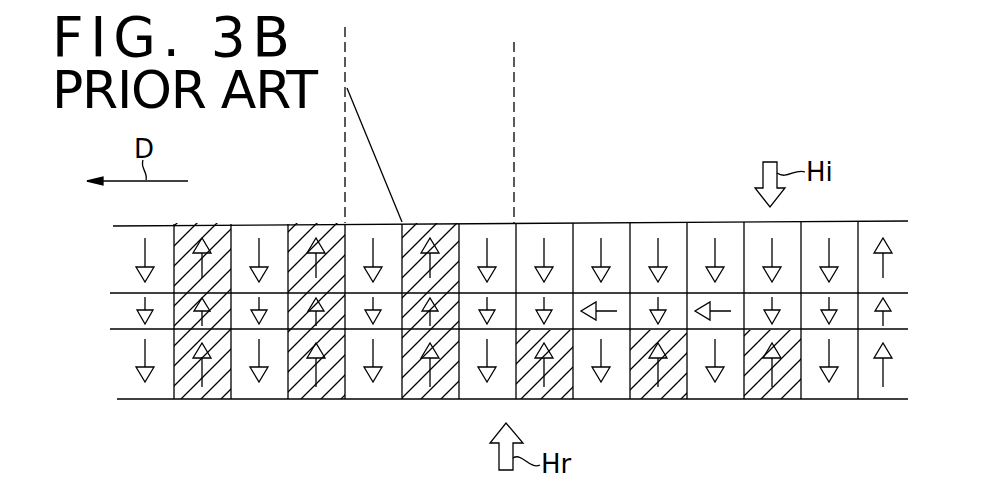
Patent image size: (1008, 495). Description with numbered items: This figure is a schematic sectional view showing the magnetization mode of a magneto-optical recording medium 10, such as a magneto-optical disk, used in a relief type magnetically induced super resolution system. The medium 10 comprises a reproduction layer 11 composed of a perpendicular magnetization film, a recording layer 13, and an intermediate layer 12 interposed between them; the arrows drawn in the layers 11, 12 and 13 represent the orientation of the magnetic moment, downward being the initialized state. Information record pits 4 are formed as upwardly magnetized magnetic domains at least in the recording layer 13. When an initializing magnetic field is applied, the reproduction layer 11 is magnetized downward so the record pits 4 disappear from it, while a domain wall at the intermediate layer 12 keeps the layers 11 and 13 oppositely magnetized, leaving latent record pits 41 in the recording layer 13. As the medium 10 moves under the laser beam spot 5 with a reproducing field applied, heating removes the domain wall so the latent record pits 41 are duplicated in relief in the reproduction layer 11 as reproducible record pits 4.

The information record pits 4 is at (302, 228).
The latent record pits 41 is at (757, 388).
The laser beam spot 5 is at (630, 221).
The magneto-optical recording medium 10 is at (717, 221).
The reproduction layer 11 is at (122, 250).
The intermediate layer 12 is at (122, 318).
The recording layer 13 is at (273, 386).